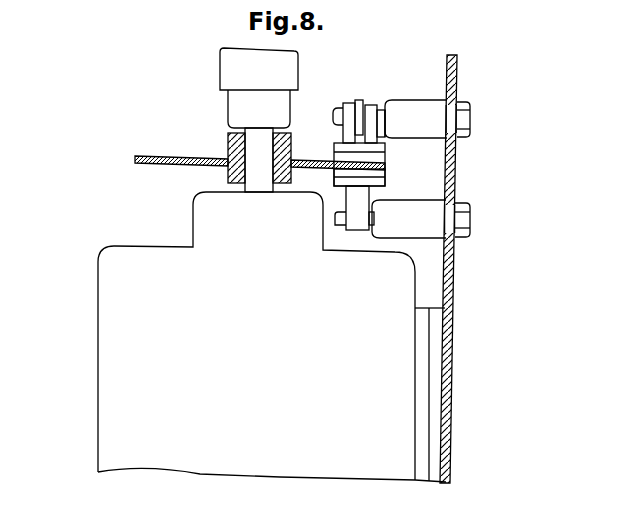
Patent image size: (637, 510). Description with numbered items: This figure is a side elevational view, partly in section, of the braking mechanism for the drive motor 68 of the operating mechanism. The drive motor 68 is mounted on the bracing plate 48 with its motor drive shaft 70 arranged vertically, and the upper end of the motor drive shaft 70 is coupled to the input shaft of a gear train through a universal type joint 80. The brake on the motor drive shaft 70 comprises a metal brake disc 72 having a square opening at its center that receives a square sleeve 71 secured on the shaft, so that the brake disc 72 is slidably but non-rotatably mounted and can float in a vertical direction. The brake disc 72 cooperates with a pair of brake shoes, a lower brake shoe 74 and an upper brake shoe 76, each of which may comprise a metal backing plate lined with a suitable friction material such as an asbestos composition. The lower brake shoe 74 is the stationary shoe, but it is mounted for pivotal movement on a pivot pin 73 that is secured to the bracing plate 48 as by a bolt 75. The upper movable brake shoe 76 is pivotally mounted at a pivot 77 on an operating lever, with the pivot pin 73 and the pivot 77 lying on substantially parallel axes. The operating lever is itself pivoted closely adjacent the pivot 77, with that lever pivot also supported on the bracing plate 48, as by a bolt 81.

The bracing plate 48 is at (458, 175).
The drive motor 68 is at (105, 352).
The motor drive shaft 70 is at (247, 143).
The square sleeve 71 is at (288, 143).
The brake disc 72 is at (178, 166).
The pivot pin 73 is at (343, 222).
The lower brake shoe 74 is at (385, 177).
The bolt 75 is at (470, 224).
The upper brake shoe 76 is at (385, 149).
The pivot 77 is at (335, 117).
The universal type joint 80 is at (228, 68).
The bolt 81 is at (470, 120).